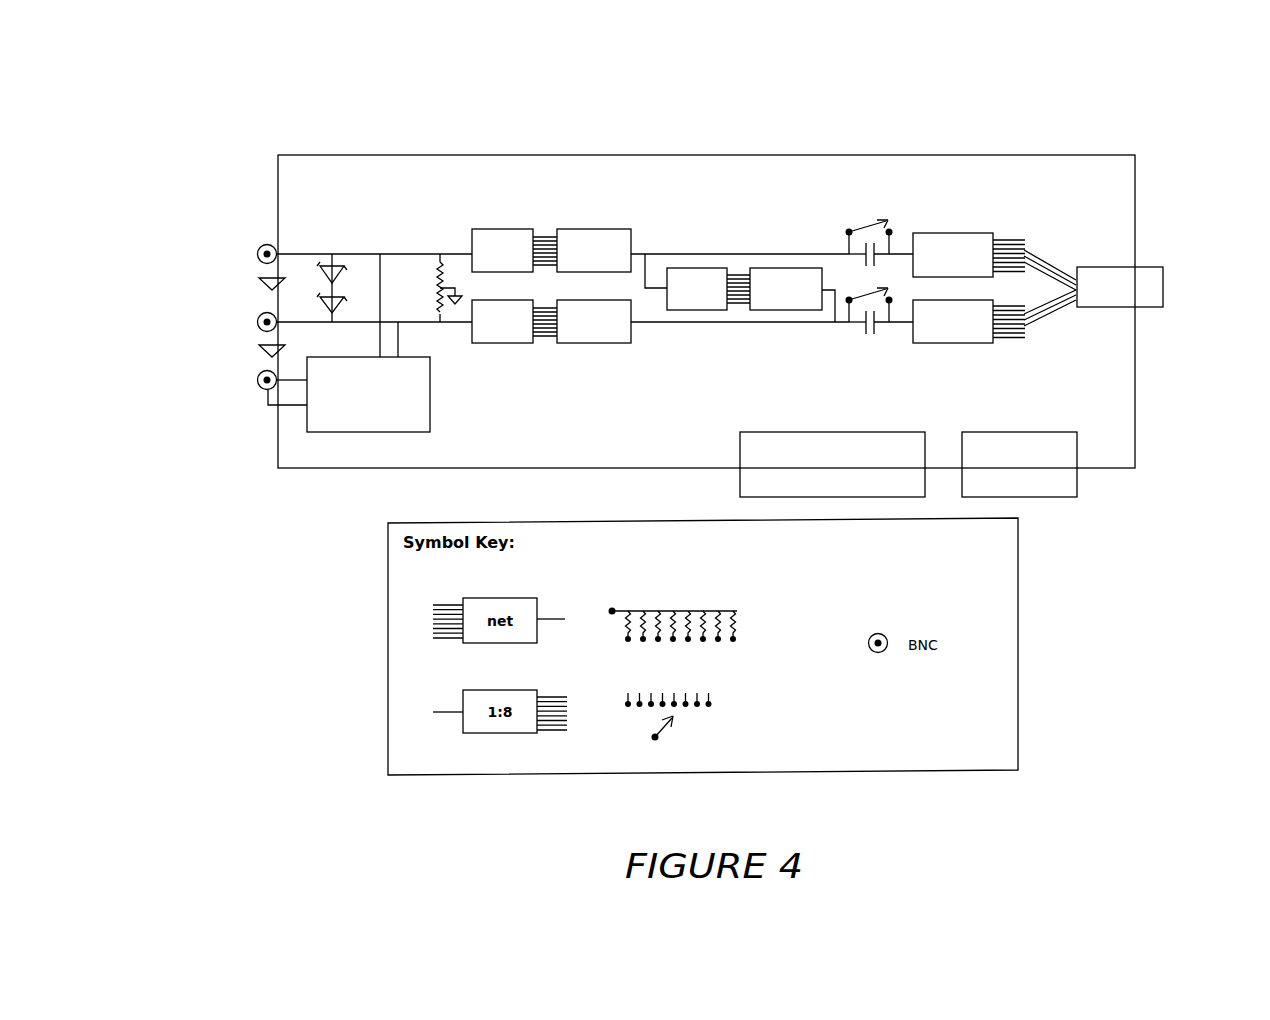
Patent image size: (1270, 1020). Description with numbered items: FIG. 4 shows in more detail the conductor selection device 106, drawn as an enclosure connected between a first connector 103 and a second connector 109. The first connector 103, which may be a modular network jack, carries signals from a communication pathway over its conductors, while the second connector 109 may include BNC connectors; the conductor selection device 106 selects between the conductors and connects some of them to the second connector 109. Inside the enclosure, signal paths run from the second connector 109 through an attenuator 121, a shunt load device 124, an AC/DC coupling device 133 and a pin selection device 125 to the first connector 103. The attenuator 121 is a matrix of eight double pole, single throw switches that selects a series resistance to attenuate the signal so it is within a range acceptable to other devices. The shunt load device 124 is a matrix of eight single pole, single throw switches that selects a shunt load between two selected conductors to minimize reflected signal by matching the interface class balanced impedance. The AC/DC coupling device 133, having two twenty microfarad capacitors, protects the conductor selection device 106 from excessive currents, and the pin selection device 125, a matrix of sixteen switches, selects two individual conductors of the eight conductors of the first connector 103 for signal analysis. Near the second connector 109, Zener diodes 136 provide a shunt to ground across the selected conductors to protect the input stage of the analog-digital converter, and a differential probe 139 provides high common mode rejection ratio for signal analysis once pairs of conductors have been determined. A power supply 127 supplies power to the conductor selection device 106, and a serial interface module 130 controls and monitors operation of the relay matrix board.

The conductor selection device 106 is at (1082, 115).
The second connector 109 is at (257, 247).
The Zener diodes 136 is at (312, 282).
The differential probe 139 is at (430, 405).
The attenuator 121 is at (539, 198).
The shunt load device 124 is at (735, 265).
The AC/DC coupling device 133 is at (880, 192).
The pin selection device 125 is at (1015, 222).
The first connector 103 is at (1150, 307).
The RS-232 interface module 130 is at (798, 432).
The power supply 127 is at (1058, 497).